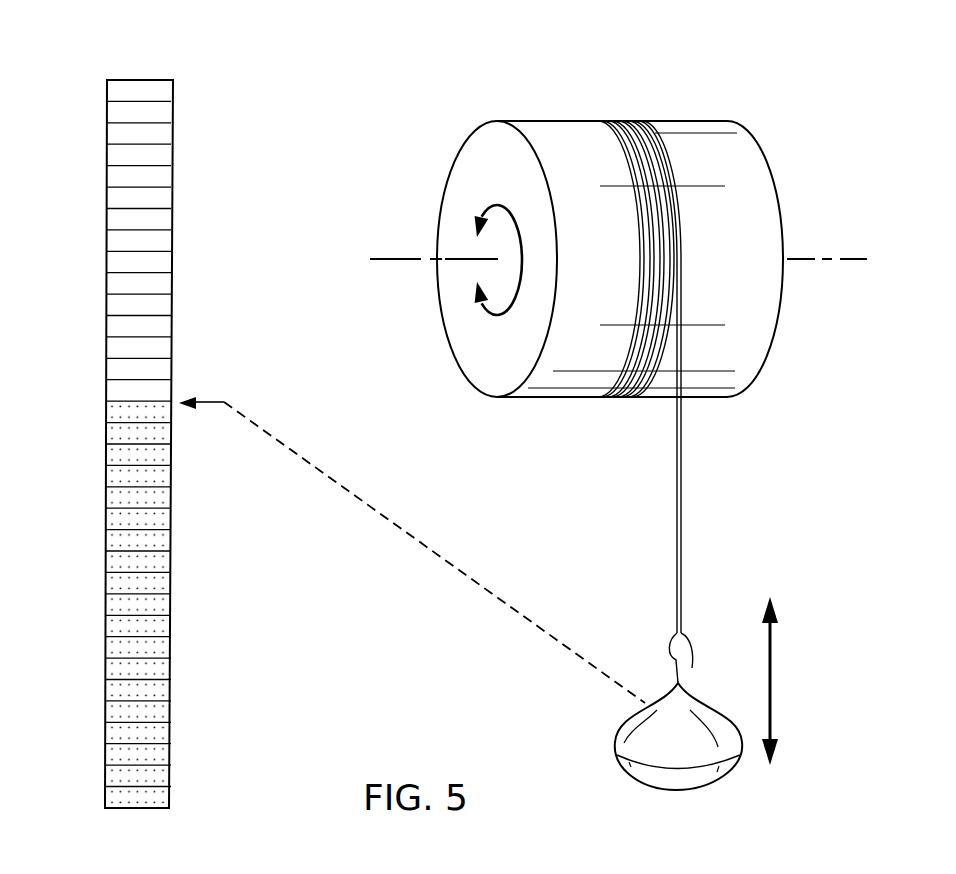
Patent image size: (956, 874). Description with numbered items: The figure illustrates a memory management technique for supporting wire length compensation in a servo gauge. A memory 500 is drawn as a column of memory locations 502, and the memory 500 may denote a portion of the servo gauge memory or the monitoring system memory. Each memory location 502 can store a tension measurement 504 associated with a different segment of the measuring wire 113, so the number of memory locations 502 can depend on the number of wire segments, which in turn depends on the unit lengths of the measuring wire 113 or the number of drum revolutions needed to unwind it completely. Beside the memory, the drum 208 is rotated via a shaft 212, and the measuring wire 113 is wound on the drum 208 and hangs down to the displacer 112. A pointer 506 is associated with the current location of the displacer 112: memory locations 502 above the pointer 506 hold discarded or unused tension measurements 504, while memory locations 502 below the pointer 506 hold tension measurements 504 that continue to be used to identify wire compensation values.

The memory 500 is at (104, 411).
The memory locations 502 is at (115, 133).
The tension measurement 504 is at (113, 755).
The pointer 506 is at (209, 401).
The drum 208 is at (662, 121).
The shaft 212 is at (827, 256).
The measuring wire 113 is at (682, 470).
The displacer 112 is at (700, 792).